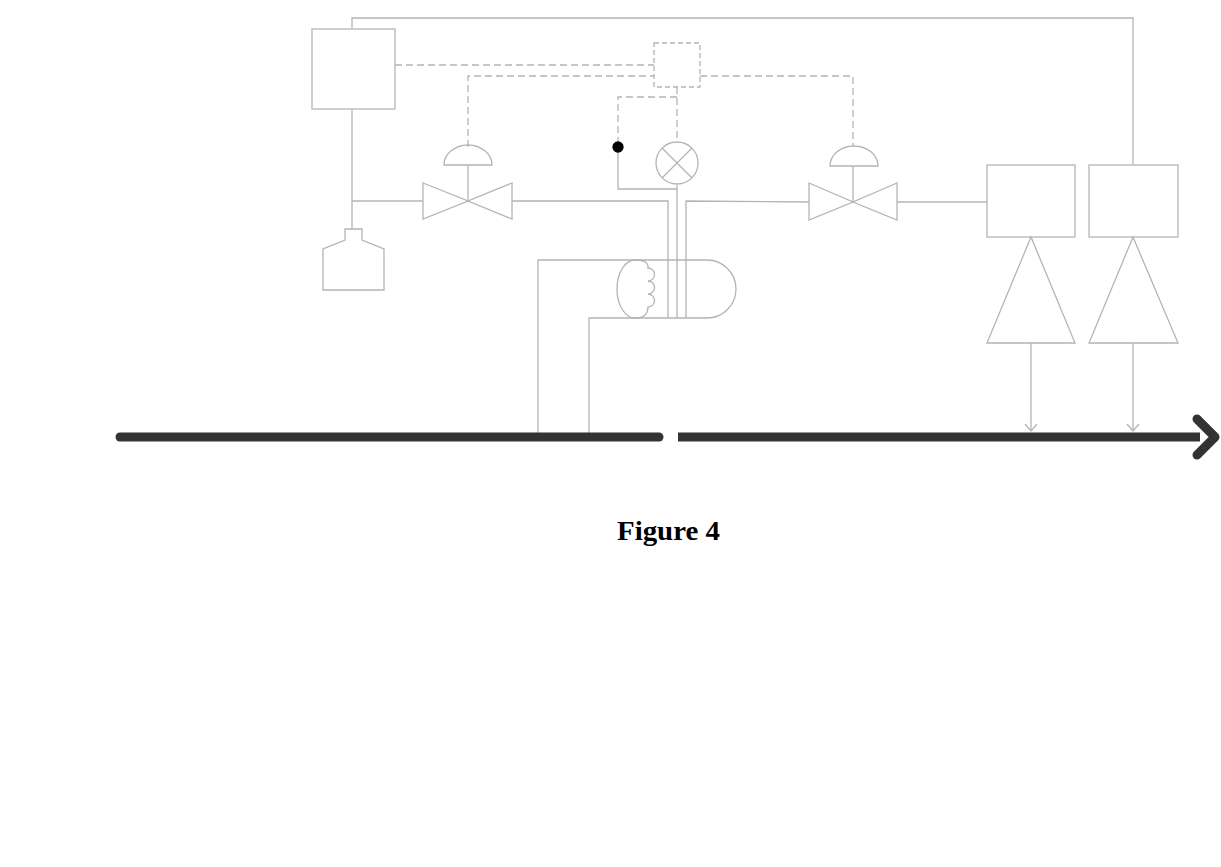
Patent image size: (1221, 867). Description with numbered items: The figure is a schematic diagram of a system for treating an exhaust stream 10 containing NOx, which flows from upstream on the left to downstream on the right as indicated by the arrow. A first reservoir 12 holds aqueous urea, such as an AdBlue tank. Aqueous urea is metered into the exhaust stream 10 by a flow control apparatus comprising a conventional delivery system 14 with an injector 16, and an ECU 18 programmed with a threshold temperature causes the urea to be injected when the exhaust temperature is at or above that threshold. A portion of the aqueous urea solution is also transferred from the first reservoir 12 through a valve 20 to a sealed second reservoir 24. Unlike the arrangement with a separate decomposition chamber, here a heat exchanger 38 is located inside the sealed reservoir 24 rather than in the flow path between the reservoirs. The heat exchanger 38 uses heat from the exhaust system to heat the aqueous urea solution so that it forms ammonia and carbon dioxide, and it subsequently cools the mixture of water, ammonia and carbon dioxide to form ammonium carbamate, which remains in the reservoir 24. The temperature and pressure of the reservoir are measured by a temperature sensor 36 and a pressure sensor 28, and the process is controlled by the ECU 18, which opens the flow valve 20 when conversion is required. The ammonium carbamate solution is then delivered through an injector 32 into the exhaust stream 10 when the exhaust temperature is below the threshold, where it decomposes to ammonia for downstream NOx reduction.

The exhaust stream 10 is at (667, 437).
The first reservoir 12 is at (353, 259).
The delivery system 14 is at (353, 69).
The injector 16 is at (1133, 298).
The ECU 18 is at (677, 65).
The first valve 20 is at (660, 201).
The sealed reservoir 24 is at (717, 289).
The pressure sensor 28 is at (689, 163).
The injector 32 is at (1031, 298).
The temperature sensor 36 is at (606, 147).
The heat exchanger 38 is at (636, 289).